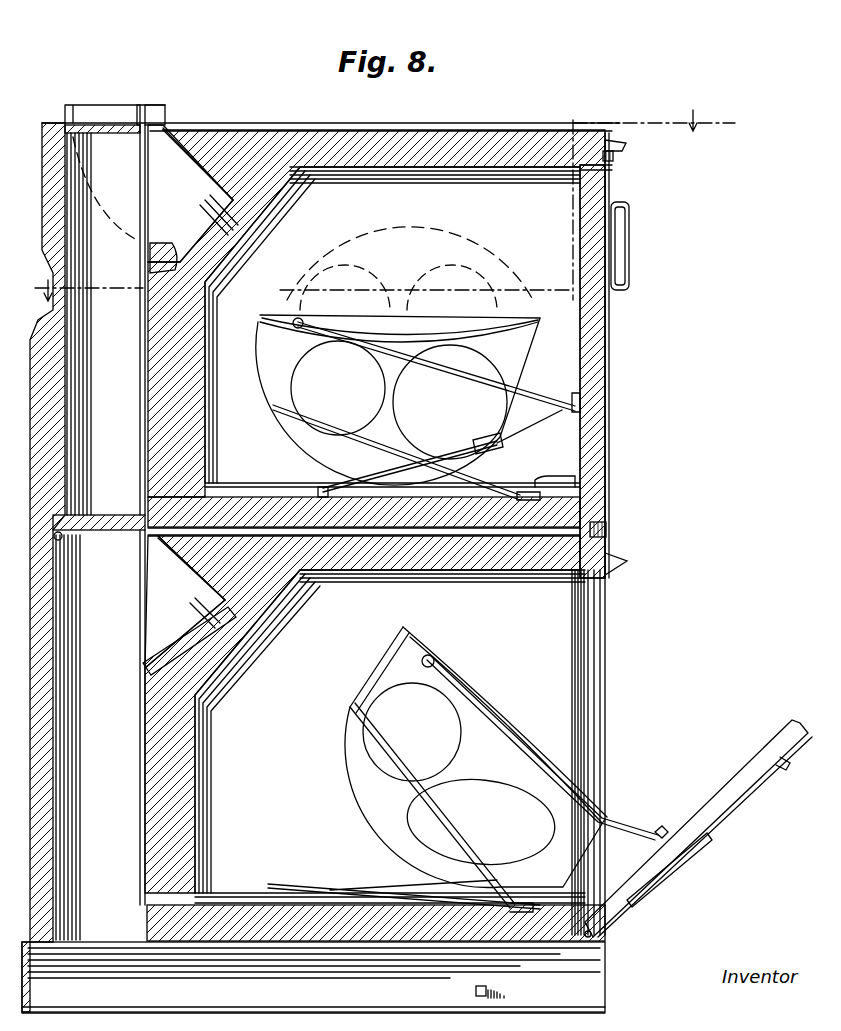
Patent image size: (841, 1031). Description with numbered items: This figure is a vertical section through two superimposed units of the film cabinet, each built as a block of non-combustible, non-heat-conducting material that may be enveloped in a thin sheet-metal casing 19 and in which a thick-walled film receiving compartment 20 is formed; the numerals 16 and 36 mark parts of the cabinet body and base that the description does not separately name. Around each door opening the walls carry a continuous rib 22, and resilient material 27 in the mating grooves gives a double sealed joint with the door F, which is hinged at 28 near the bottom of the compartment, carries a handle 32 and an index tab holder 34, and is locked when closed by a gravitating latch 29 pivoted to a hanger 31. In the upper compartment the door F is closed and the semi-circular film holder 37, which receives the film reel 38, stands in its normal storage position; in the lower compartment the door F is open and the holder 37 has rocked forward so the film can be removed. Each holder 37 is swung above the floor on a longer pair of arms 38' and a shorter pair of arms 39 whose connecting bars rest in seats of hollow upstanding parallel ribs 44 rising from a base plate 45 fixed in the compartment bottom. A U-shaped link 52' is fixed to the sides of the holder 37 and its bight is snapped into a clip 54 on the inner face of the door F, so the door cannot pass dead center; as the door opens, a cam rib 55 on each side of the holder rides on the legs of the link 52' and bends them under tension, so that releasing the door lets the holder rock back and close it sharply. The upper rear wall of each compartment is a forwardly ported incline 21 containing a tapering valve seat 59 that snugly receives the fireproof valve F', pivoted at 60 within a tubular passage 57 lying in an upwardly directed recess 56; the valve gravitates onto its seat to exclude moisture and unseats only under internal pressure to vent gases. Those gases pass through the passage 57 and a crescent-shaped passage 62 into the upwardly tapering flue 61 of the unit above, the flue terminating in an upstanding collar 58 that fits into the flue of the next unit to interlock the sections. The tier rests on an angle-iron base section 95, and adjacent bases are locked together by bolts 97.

The cabinet casing 16 is at (356, 130).
The casing of relatively thin sheet metal 19 is at (411, 172).
The film receiving compartment 20 is at (433, 183).
The ported inclined wall 21 is at (293, 195).
The continuous surrounding rib 22 is at (608, 580).
The resilient material 27 is at (610, 170).
The hinge 28 is at (604, 530).
The gravitating latch 29 is at (608, 156).
The hanger 31 is at (620, 143).
The handle 32 is at (630, 242).
The index tab holder 34 is at (606, 413).
The base bottom 36 is at (263, 998).
The film holder 37 is at (518, 340).
The film reel 38 is at (410, 248).
The arms 38' is at (414, 603).
The arms 39 is at (540, 470).
The hollow upstanding parallel ribs 44 is at (578, 488).
The base plate 45 is at (590, 490).
The U-shaped link 52' is at (504, 579).
The clip 54 is at (580, 397).
The cam rib 55 is at (560, 775).
The upwardly directed recess 56 is at (208, 163).
The tubular passage 57 is at (162, 163).
The upstanding tubular extension 58 is at (163, 127).
The tapering valve seat 59 is at (150, 310).
The pivot 60 is at (150, 267).
The upwardly tapering flue 61 is at (95, 536).
The crescent shaped passage 62 is at (150, 112).
The base section 95 is at (313, 977).
The bolts 97 is at (484, 990).
The door F is at (705, 676).
The fire proof valve F' is at (204, 404).